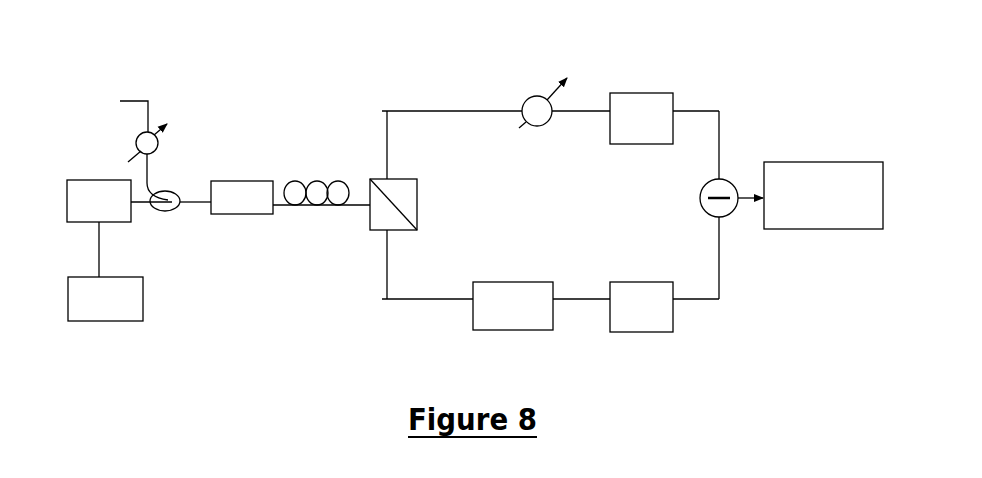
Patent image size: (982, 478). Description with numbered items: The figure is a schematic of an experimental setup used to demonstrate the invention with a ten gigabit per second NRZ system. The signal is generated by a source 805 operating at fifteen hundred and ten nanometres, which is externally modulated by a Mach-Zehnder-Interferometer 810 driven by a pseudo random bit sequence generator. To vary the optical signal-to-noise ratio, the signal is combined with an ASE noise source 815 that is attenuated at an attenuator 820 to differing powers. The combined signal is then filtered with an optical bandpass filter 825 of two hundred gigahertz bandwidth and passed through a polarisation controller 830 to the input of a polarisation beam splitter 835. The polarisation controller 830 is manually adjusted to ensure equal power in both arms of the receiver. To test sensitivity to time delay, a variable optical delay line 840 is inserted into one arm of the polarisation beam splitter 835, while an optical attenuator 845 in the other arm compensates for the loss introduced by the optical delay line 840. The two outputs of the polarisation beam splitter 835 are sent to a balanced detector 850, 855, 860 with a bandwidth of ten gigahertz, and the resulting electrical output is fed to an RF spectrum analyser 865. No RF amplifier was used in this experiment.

The source 805 is at (105, 271).
The Mach-Zehnder-Interferometer 810 is at (119, 201).
The ASE noise source 815 is at (144, 130).
The attenuator 820 is at (167, 129).
The optical bandpass filter 825 is at (242, 197).
The polarisation controller 830 is at (321, 178).
The polarisation beam splitter 835 is at (411, 205).
The variable optical delay line 840 is at (541, 287).
The optical attenuator 845 is at (558, 125).
The balanced detector 850 is at (664, 118).
The balanced detector 855 is at (664, 307).
The balanced detector 860 is at (709, 205).
The RF spectrum analyser 865 is at (823, 195).